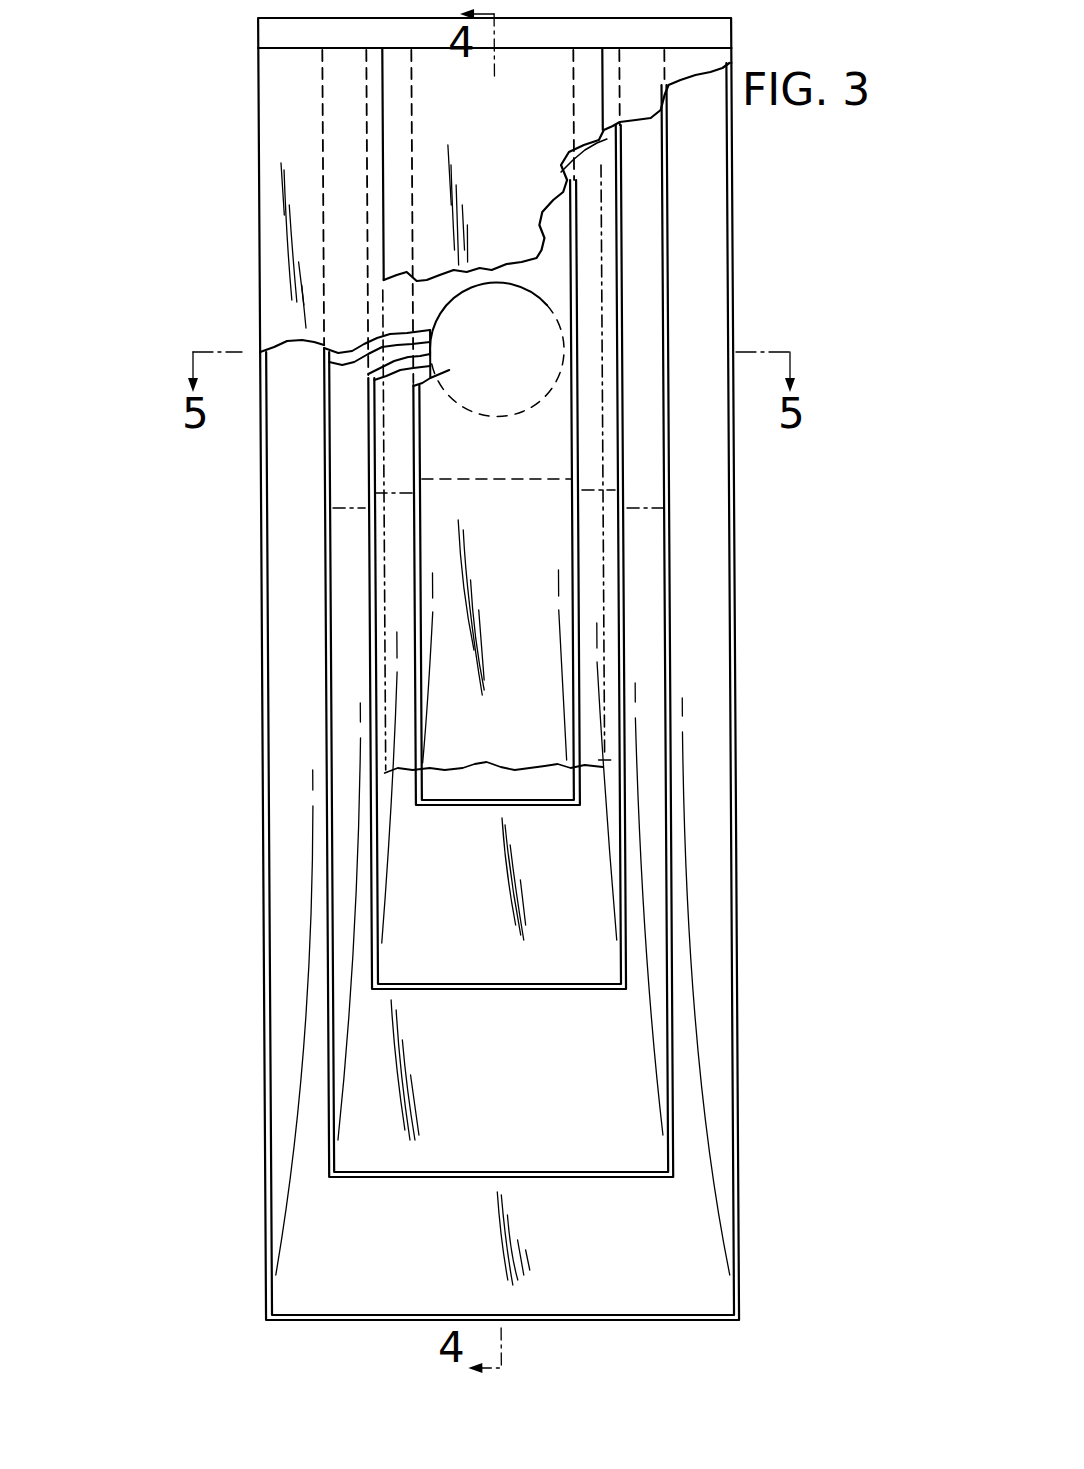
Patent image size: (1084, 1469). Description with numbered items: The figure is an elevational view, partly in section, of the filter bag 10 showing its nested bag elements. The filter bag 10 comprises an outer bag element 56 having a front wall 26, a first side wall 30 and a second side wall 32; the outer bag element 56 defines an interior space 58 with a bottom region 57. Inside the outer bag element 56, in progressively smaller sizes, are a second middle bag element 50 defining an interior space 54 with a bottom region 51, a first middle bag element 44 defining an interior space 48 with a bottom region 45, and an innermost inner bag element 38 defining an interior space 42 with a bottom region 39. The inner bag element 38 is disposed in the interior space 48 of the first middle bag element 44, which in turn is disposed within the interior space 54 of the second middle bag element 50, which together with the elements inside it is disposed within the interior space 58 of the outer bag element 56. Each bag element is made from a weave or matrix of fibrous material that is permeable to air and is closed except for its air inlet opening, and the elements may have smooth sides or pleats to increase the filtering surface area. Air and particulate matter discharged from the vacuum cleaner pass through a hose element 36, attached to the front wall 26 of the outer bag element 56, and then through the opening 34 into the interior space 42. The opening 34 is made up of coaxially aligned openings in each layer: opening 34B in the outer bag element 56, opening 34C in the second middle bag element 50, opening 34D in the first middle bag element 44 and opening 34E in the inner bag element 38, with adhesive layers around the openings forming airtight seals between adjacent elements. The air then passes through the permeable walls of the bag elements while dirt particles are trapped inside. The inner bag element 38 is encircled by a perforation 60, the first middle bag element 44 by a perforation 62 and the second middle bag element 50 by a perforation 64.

The filter bag 10 is at (240, 150).
The front wall 26 is at (302, 207).
The first side wall 30 is at (258, 253).
The second side wall 32 is at (731, 230).
The opening 34 is at (465, 308).
The opening in bag element 56 34B is at (441, 322).
The opening in bag element 50 34C is at (437, 347).
The opening in bag element 44 34D is at (433, 358).
The opening in bag element 38 34E is at (447, 373).
The hose element 36 is at (607, 660).
The inner bag element 38 is at (590, 568).
The bottom region 39 is at (560, 785).
The interior space 42 is at (525, 622).
The first middle bag element 44 is at (636, 826).
The bottom region 45 is at (585, 968).
The interior space 48 is at (477, 878).
The second middle bag element 50 is at (684, 1023).
The bottom region 51 is at (587, 1162).
The interior space 54 is at (513, 1061).
The outer bag element 56 is at (748, 1169).
The bottom region 57 is at (607, 1305).
The interior space 58 is at (501, 991).
The perforation 60 is at (472, 482).
The perforation 62 is at (397, 494).
The perforation 64 is at (350, 508).